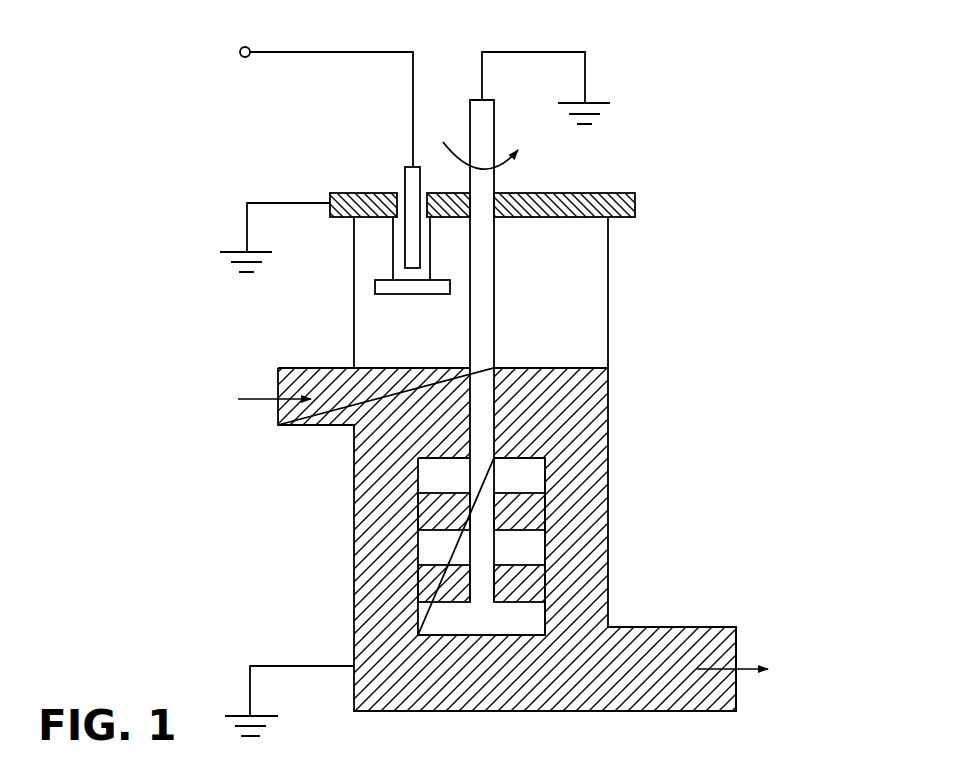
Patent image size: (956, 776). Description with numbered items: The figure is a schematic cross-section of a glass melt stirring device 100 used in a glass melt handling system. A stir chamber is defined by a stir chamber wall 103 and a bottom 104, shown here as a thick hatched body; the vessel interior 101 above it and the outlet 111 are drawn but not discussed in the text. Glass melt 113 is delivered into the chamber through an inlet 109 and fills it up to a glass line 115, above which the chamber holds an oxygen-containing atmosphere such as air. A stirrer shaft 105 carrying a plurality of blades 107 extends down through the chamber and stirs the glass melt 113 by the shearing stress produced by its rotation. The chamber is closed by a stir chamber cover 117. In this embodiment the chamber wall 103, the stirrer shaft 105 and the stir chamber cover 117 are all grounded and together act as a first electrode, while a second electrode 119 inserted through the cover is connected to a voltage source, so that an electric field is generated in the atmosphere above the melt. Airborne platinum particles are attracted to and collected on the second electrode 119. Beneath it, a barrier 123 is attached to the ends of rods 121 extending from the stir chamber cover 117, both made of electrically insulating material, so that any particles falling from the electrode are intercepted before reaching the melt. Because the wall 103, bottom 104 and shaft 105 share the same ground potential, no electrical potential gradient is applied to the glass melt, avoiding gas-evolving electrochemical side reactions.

The glass melt stirring device 100 is at (682, 92).
The vessel 101 is at (581, 270).
The stir chamber wall 103 is at (610, 428).
The bottom 104 is at (706, 713).
The stirrer shaft 105 is at (481, 187).
The blades 107 is at (530, 547).
The inlet 109 is at (276, 371).
The outlet 111 is at (702, 627).
The glass melt 113 is at (592, 493).
The glass line 115 is at (587, 368).
The stir chamber cover 117 is at (627, 205).
The second electrode 119 is at (401, 178).
The rods 121 is at (390, 237).
The barrier 123 is at (387, 287).